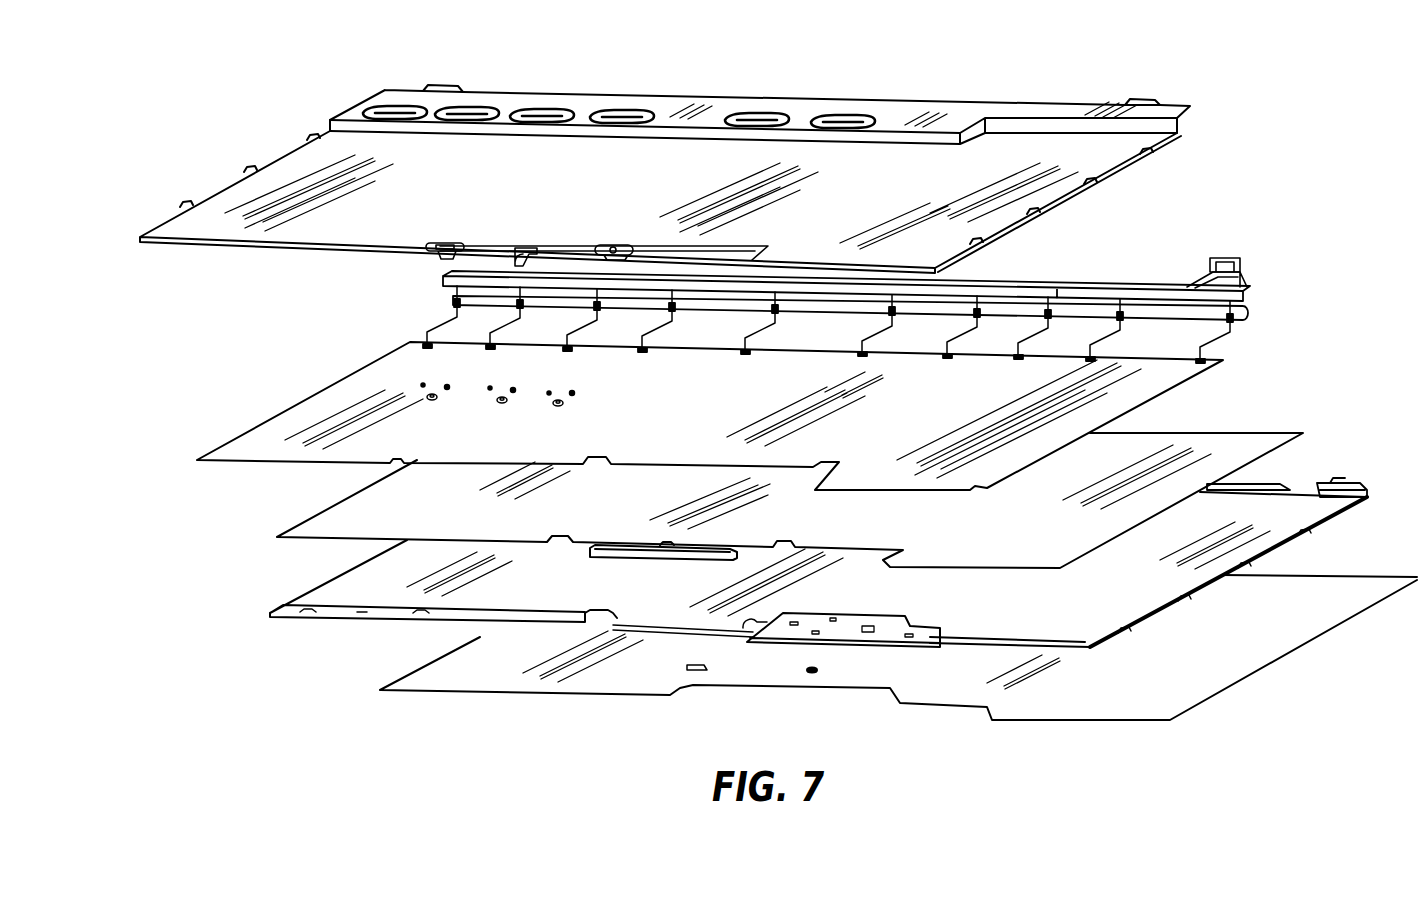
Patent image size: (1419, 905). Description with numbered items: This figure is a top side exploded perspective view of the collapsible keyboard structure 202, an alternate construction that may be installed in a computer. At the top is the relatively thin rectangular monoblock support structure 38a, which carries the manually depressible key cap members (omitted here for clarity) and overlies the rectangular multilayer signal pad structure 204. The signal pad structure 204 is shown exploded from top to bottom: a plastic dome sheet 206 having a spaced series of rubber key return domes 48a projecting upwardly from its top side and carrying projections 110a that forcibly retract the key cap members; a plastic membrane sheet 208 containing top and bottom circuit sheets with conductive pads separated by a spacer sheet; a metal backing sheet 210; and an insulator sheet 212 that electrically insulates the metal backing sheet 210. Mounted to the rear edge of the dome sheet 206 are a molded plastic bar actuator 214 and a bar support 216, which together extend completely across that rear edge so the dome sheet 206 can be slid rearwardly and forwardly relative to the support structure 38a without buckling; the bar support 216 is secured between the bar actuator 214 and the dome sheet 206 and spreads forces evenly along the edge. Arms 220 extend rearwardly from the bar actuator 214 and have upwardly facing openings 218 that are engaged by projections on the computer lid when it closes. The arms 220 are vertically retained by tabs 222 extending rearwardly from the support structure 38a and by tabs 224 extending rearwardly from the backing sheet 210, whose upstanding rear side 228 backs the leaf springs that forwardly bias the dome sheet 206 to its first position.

The monoblock support structure 38a is at (1092, 98).
The rubber key return domes 48a is at (435, 402).
The projections 110a is at (425, 385).
The collapsible keyboard structure 202 is at (1300, 218).
The multilayer signal pad structure 204 is at (175, 685).
The dome sheet 206 is at (318, 395).
The membrane sheet 208 is at (318, 505).
The metal backing sheet 210 is at (318, 585).
The insulator sheet 212 is at (418, 665).
The bar actuator 214 is at (1150, 247).
The bar support 216 is at (450, 301).
The openings 218 is at (547, 243).
The arms 220 is at (493, 252).
The tabs 222 is at (460, 88).
The tabs 224 is at (1327, 482).
The upstanding rear side 228 is at (1355, 482).